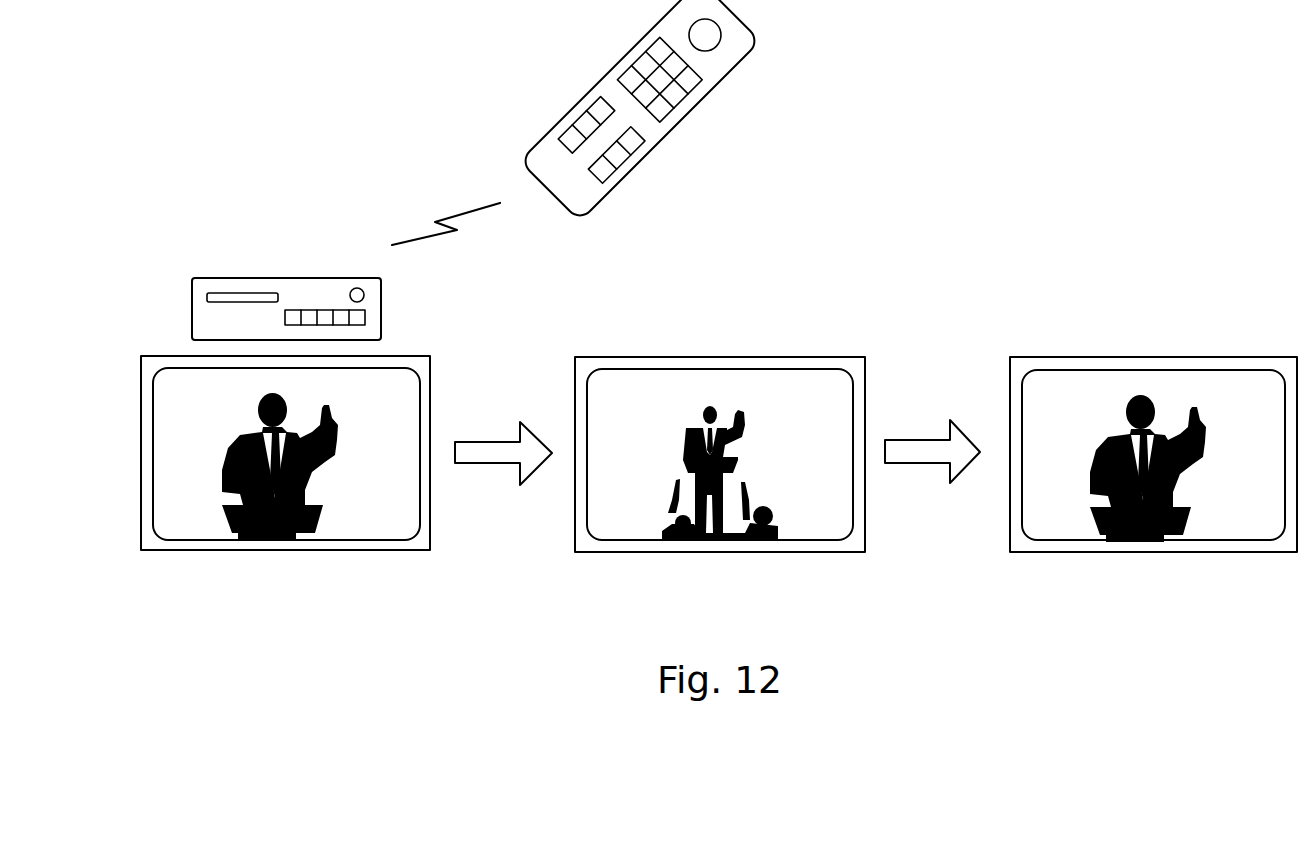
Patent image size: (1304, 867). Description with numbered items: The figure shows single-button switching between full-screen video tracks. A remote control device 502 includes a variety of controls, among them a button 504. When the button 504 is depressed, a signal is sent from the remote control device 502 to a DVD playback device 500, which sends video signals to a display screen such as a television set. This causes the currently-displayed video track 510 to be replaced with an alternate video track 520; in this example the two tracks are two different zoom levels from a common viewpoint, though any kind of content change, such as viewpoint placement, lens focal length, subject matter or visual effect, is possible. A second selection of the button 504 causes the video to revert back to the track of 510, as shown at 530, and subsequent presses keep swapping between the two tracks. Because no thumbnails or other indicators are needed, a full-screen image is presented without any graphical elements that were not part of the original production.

The DVD playback device 500 is at (202, 278).
The remote control device 502 is at (718, 93).
The button 504 is at (600, 172).
The currently-displayed video track 510 is at (420, 356).
The alternate video track 520 is at (855, 357).
The reverted video track 530 is at (1229, 357).